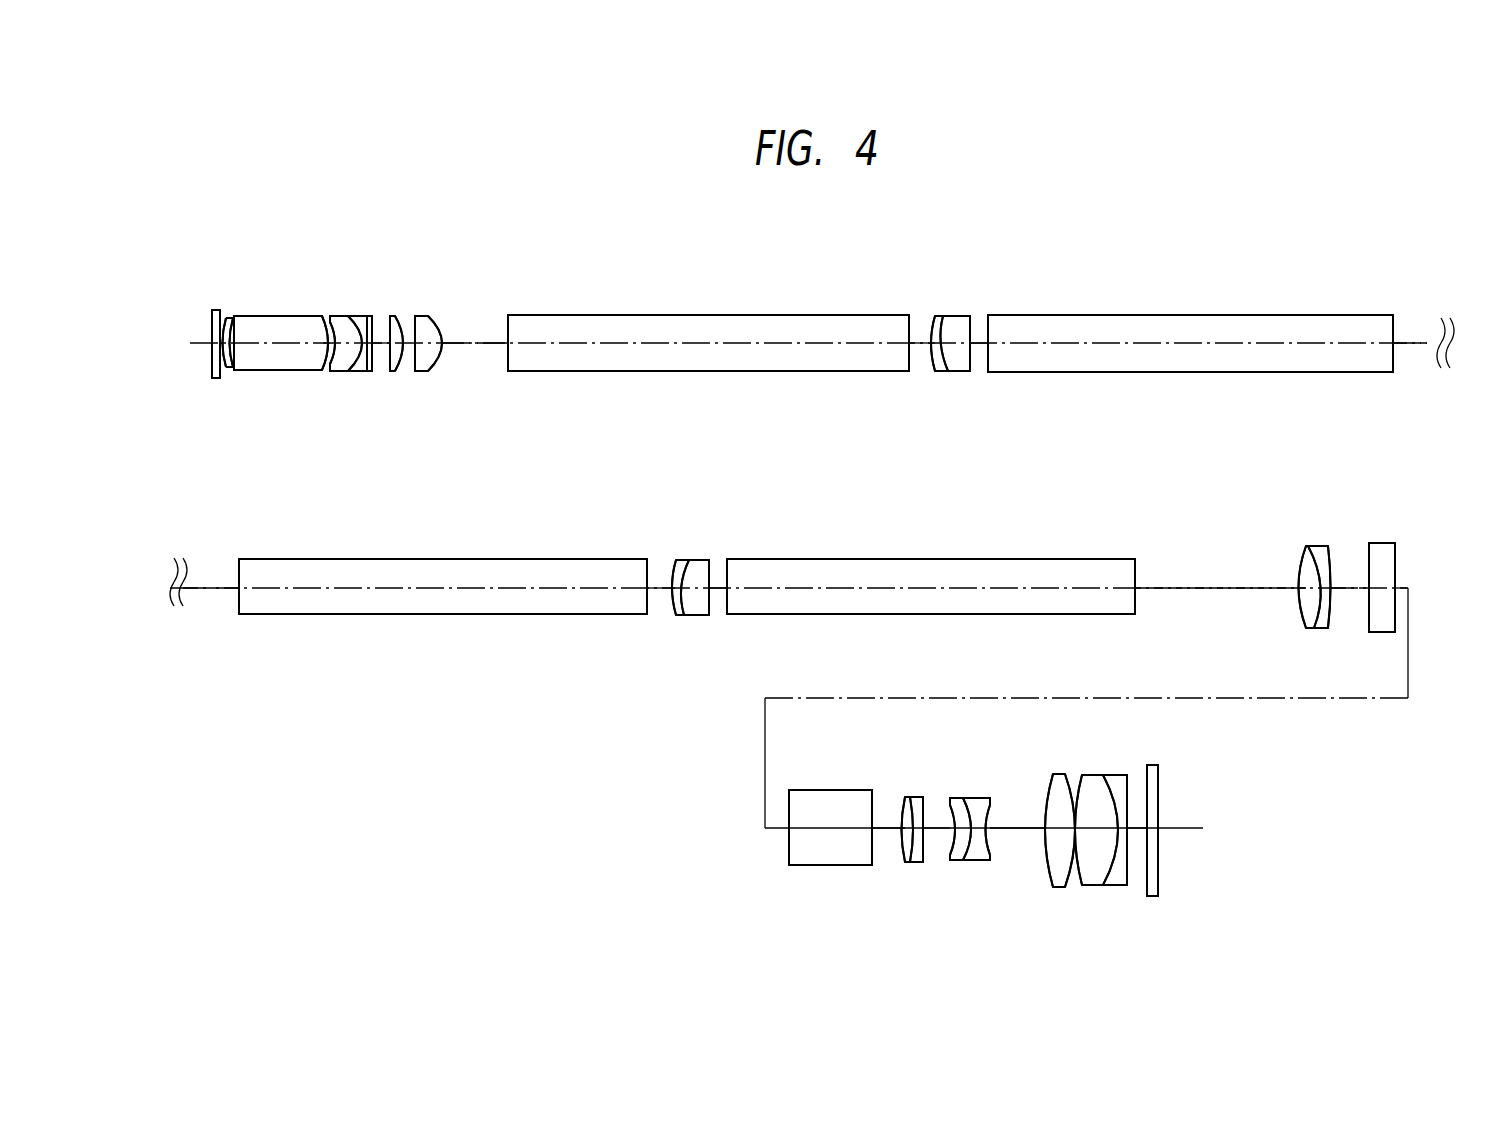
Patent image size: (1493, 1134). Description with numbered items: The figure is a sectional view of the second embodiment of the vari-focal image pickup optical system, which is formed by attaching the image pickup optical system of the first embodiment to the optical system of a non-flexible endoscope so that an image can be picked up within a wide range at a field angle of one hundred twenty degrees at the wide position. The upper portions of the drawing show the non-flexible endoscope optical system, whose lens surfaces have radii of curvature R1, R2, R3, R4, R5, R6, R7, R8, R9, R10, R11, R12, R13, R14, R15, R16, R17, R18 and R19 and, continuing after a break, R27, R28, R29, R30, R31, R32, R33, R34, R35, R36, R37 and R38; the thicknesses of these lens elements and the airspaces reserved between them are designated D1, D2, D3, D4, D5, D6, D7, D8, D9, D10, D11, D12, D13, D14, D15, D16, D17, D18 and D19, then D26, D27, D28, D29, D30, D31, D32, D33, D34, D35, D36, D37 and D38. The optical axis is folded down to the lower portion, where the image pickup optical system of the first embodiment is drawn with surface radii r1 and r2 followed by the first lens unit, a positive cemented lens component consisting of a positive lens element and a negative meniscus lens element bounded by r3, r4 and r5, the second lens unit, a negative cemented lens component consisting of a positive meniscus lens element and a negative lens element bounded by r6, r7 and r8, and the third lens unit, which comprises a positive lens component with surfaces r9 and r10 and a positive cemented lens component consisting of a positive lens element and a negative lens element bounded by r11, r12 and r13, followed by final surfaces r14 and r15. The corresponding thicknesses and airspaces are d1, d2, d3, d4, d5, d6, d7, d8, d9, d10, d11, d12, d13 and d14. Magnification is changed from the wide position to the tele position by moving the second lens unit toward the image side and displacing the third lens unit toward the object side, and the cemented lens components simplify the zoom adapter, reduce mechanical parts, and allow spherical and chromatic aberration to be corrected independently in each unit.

The radius of curvature R1 is at (210, 327).
The radius of curvature R2 is at (215, 322).
The radius of curvature R3 is at (222, 327).
The radius of curvature R4 is at (232, 323).
The radius of curvature R5 is at (235, 320).
The radius of curvature R6 is at (320, 320).
The radius of curvature R7 is at (332, 317).
The radius of curvature R8 is at (358, 317).
The radius of curvature R9 is at (373, 317).
The radius of curvature R10 is at (400, 317).
The radius of curvature R11 is at (427, 317).
The radius of curvature R12 is at (440, 320).
The radius of curvature R13 is at (505, 317).
The radius of curvature R14 is at (903, 322).
The radius of curvature R15 is at (930, 320).
The radius of curvature R16 is at (950, 320).
The radius of curvature R17 is at (970, 322).
The radius of curvature R18 is at (990, 322).
The radius of curvature R19 is at (1388, 322).
The radius of curvature R27 is at (238, 567).
The radius of curvature R28 is at (643, 567).
The radius of curvature R29 is at (668, 567).
The radius of curvature R30 is at (690, 567).
The radius of curvature R31 is at (713, 568).
The radius of curvature R32 is at (730, 570).
The radius of curvature R33 is at (1137, 570).
The radius of curvature R34 is at (1298, 567).
The radius of curvature R35 is at (1313, 550).
The radius of curvature R36 is at (1332, 550).
The radius of curvature R37 is at (1375, 550).
The radius of curvature R38 is at (1398, 570).
The lens thickness or airspace D1 is at (212, 352).
The lens thickness or airspace D2 is at (215, 357).
The lens thickness or airspace D3 is at (230, 368).
The lens thickness or airspace D4 is at (233, 357).
The lens thickness or airspace D5 is at (280, 350).
The lens thickness or airspace D6 is at (325, 347).
The lens thickness or airspace D7 is at (333, 347).
The lens thickness or airspace D8 is at (365, 347).
The lens thickness or airspace D9 is at (385, 347).
The lens thickness or airspace D10 is at (410, 347).
The lens thickness or airspace D11 is at (430, 347).
The lens thickness or airspace D12 is at (462, 347).
The lens thickness or airspace D13 is at (645, 343).
The lens thickness or airspace D14 is at (922, 343).
The lens thickness or airspace D15 is at (937, 343).
The lens thickness or airspace D16 is at (958, 345).
The lens thickness or airspace D17 is at (977, 345).
The lens thickness or airspace D18 is at (1080, 345).
The lens thickness or airspace D19 is at (1427, 343).
The lens thickness or airspace D26 is at (210, 590).
The lens thickness or airspace D27 is at (383, 590).
The lens thickness or airspace D28 is at (658, 590).
The lens thickness or airspace D29 is at (675, 590).
The lens thickness or airspace D30 is at (695, 590).
The lens thickness or airspace D31 is at (713, 590).
The lens thickness or airspace D32 is at (850, 590).
The lens thickness or airspace D33 is at (1202, 590).
The lens thickness or airspace D34 is at (1297, 597).
The lens thickness or airspace D35 is at (1318, 590).
The lens thickness or airspace D36 is at (1340, 593).
The lens thickness or airspace D37 is at (1382, 590).
The lens thickness or airspace D38 is at (1405, 582).
The radius of curvature r1 is at (787, 807).
The radius of curvature r2 is at (870, 803).
The radius of curvature r3 is at (900, 803).
The radius of curvature r4 is at (908, 803).
The radius of curvature r5 is at (923, 802).
The radius of curvature r6 is at (947, 807).
The radius of curvature r7 is at (965, 802).
The radius of curvature r8 is at (983, 803).
The radius of curvature r9 is at (1047, 790).
The radius of curvature r10 is at (1063, 783).
The radius of curvature r11 is at (1080, 783).
The radius of curvature r12 is at (1108, 783).
The radius of curvature r13 is at (1132, 790).
The radius of curvature r14 is at (1152, 787).
The radius of curvature r15 is at (1160, 783).
The lens thickness or airspace d1 is at (818, 833).
The lens thickness or airspace d2 is at (885, 833).
The lens thickness or airspace d3 is at (892, 833).
The lens thickness or airspace d4 is at (907, 833).
The lens thickness or airspace d5 is at (937, 833).
The lens thickness or airspace d6 is at (947, 837).
The lens thickness or airspace d7 is at (973, 833).
The lens thickness or airspace d8 is at (1003, 833).
The lens thickness or airspace d9 is at (1047, 833).
The lens thickness or airspace d10 is at (1073, 833).
The lens thickness or airspace d11 is at (1095, 833).
The lens thickness or airspace d12 is at (1123, 833).
The lens thickness or airspace d13 is at (1135, 833).
The lens thickness or airspace d14 is at (1157, 833).